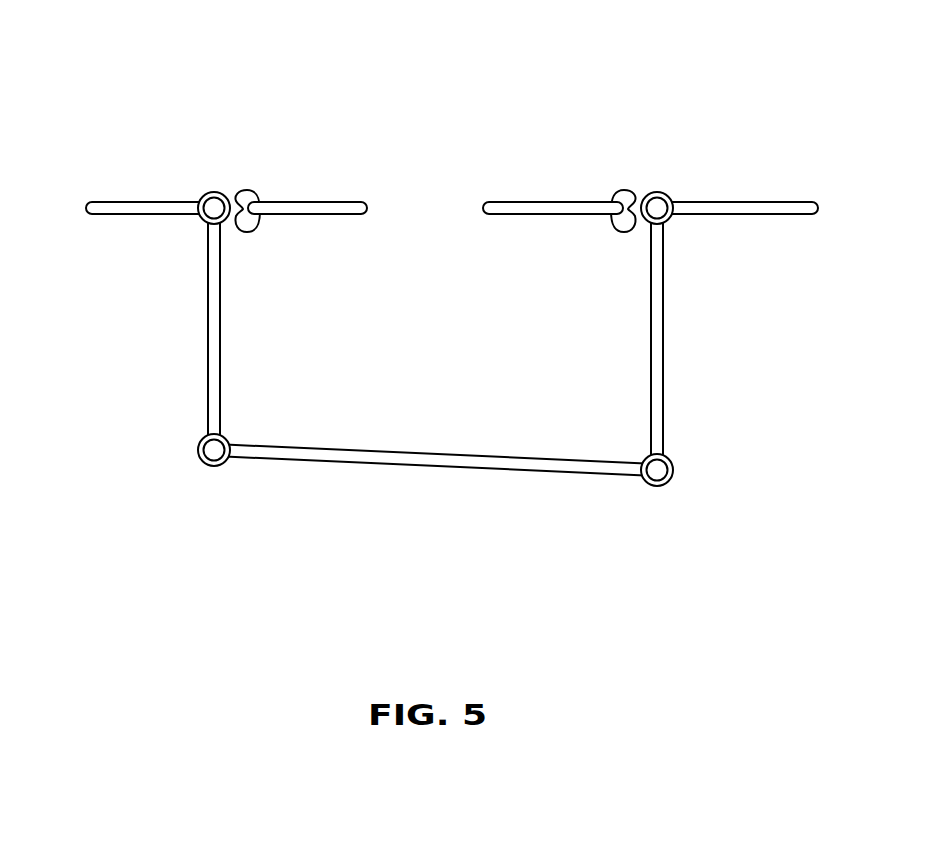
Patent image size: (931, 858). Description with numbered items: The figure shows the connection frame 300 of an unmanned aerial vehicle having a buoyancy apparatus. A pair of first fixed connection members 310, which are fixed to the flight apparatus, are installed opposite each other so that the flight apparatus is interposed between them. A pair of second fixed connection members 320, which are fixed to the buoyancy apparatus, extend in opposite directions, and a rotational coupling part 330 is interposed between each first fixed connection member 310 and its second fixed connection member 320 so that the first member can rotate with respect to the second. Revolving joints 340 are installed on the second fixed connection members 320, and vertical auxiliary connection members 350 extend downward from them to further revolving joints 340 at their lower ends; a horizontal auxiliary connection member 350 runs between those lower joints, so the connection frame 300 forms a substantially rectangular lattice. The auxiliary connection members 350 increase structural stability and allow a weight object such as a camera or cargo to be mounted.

The connection frame 300 is at (97, 41).
The first fixed connection member 310 is at (320, 205).
The second fixed connection member 320 is at (122, 206).
The rotational coupling part 330 is at (246, 200).
The revolving joint 340 is at (201, 222).
The auxiliary connection member 350 is at (222, 365).